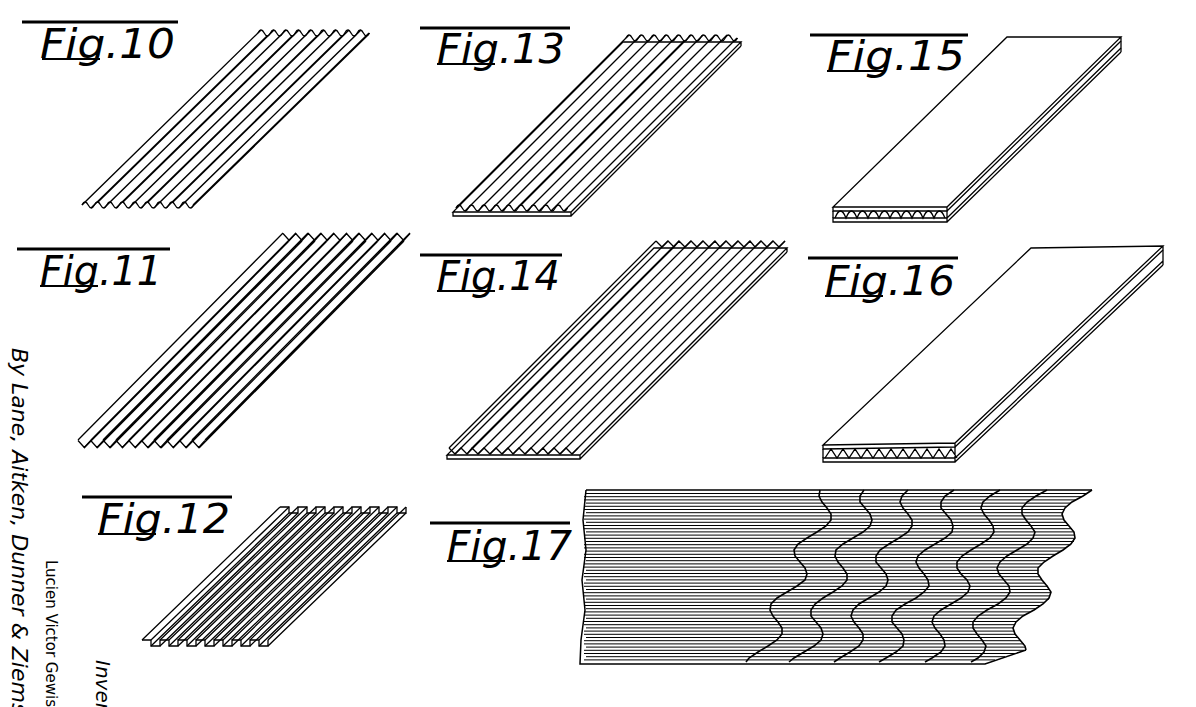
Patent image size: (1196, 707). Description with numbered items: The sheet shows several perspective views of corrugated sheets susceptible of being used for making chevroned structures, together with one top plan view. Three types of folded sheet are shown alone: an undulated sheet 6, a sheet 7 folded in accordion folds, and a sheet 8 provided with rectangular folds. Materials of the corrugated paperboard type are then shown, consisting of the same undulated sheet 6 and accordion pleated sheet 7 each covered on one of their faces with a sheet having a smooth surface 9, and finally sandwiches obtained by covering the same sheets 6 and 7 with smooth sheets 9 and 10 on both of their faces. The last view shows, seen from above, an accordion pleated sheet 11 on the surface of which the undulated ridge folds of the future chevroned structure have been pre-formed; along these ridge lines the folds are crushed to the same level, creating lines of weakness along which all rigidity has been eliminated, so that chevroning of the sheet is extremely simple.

In FIG. 10, the undulated sheet 6 is at (190, 115).
In FIG. 13, the undulated sheet 6 is at (548, 133).
In FIG. 15, the undulated sheet 6 is at (888, 219).
In FIG. 17, the undulated sheet 6 is at (980, 545).
In FIG. 11, the accordion folded sheet 7 is at (214, 322).
In FIG. 14, the accordion folded sheet 7 is at (572, 333).
In FIG. 16, the accordion folded sheet 7 is at (904, 460).
In FIG. 12, the rectangular folded sheet 8 is at (224, 566).
In FIG. 13, the smooth surface sheet 9 is at (527, 218).
In FIG. 14, the smooth surface sheet 9 is at (536, 460).
In FIG. 15, the smooth surface sheet 9 is at (924, 223).
In FIG. 16, the smooth surface sheet 9 is at (1013, 403).
In FIG. 15, the smooth sheet 10 is at (932, 121).
In FIG. 16, the smooth sheet 10 is at (937, 342).
In FIG. 17, the accordion pleated sheet 11 is at (598, 560).